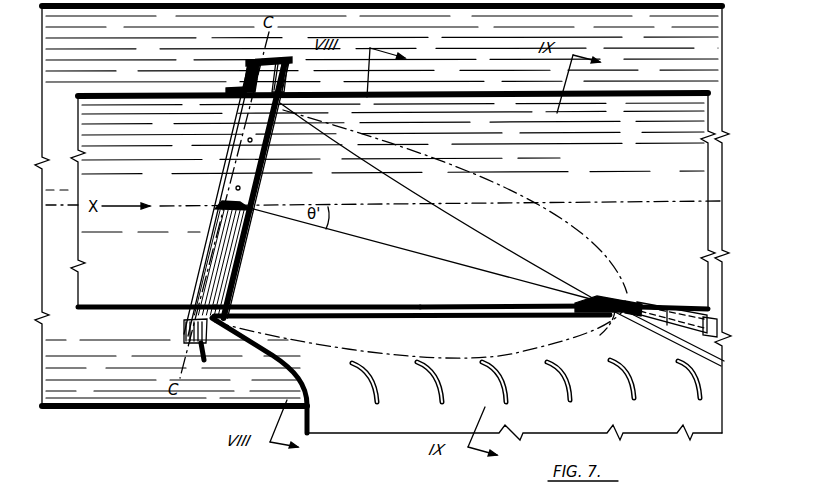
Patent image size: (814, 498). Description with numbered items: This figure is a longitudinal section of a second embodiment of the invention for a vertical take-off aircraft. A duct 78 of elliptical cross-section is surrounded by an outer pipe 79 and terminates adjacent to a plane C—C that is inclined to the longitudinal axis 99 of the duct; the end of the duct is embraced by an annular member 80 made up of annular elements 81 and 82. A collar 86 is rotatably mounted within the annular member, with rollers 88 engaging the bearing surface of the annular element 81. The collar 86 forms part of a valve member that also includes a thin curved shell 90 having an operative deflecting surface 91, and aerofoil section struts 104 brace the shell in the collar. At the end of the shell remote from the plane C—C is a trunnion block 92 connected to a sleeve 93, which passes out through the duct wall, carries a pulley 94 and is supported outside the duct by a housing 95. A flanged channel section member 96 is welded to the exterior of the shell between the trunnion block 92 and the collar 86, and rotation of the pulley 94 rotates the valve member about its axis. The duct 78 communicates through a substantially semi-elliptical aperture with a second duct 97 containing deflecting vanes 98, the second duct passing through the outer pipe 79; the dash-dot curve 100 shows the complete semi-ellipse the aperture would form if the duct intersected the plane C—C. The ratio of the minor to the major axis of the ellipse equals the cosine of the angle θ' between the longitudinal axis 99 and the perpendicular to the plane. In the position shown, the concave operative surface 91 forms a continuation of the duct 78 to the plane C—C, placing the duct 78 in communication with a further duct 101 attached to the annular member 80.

The duct 78 is at (393, 133).
The outer pipe 79 is at (118, 410).
The annular member 80 is at (245, 80).
The annular element 81 is at (285, 70).
The annular element 82 is at (255, 62).
The collar 86 is at (237, 150).
The rollers 88 is at (190, 330).
The thin curved shell 90 is at (422, 306).
The operative deflecting surface 91 is at (365, 306).
The trunnion block 92 is at (574, 302).
The sleeve 93 is at (632, 304).
The pulley 94 is at (706, 306).
The housing 95 is at (675, 331).
The flanged channel section member 96 is at (253, 313).
The second duct 97 is at (534, 412).
The deflecting vanes 98 is at (697, 383).
The longitudinal axis 99 is at (622, 201).
The semi-ellipse 100 is at (568, 220).
The further duct 101 is at (130, 312).
The aerofoil section struts 104 is at (216, 208).